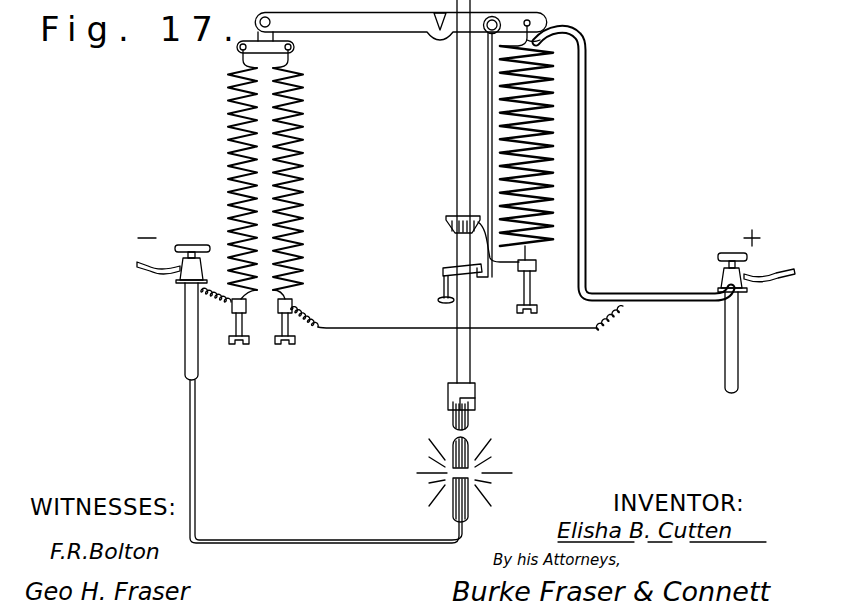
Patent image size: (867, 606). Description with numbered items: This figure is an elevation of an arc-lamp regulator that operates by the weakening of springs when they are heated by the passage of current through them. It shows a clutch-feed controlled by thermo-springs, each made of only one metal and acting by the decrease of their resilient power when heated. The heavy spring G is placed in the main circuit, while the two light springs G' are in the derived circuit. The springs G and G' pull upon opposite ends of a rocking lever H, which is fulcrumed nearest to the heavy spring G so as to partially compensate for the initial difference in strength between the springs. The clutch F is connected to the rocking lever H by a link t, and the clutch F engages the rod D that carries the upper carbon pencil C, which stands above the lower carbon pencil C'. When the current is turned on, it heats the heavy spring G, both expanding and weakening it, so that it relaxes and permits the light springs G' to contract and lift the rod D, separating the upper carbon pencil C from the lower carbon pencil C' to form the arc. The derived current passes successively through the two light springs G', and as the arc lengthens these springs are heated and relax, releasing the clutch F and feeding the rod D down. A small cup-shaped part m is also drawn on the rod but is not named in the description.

The rocking lever H is at (392, 26).
The light springs G' is at (279, 197).
The heavy spring G is at (535, 169).
The link t is at (467, 191).
The cup contact m is at (474, 239).
The clutch F is at (455, 279).
The rod D is at (454, 391).
The upper carbon pencil C is at (468, 448).
The lower carbon pencil C' is at (470, 500).